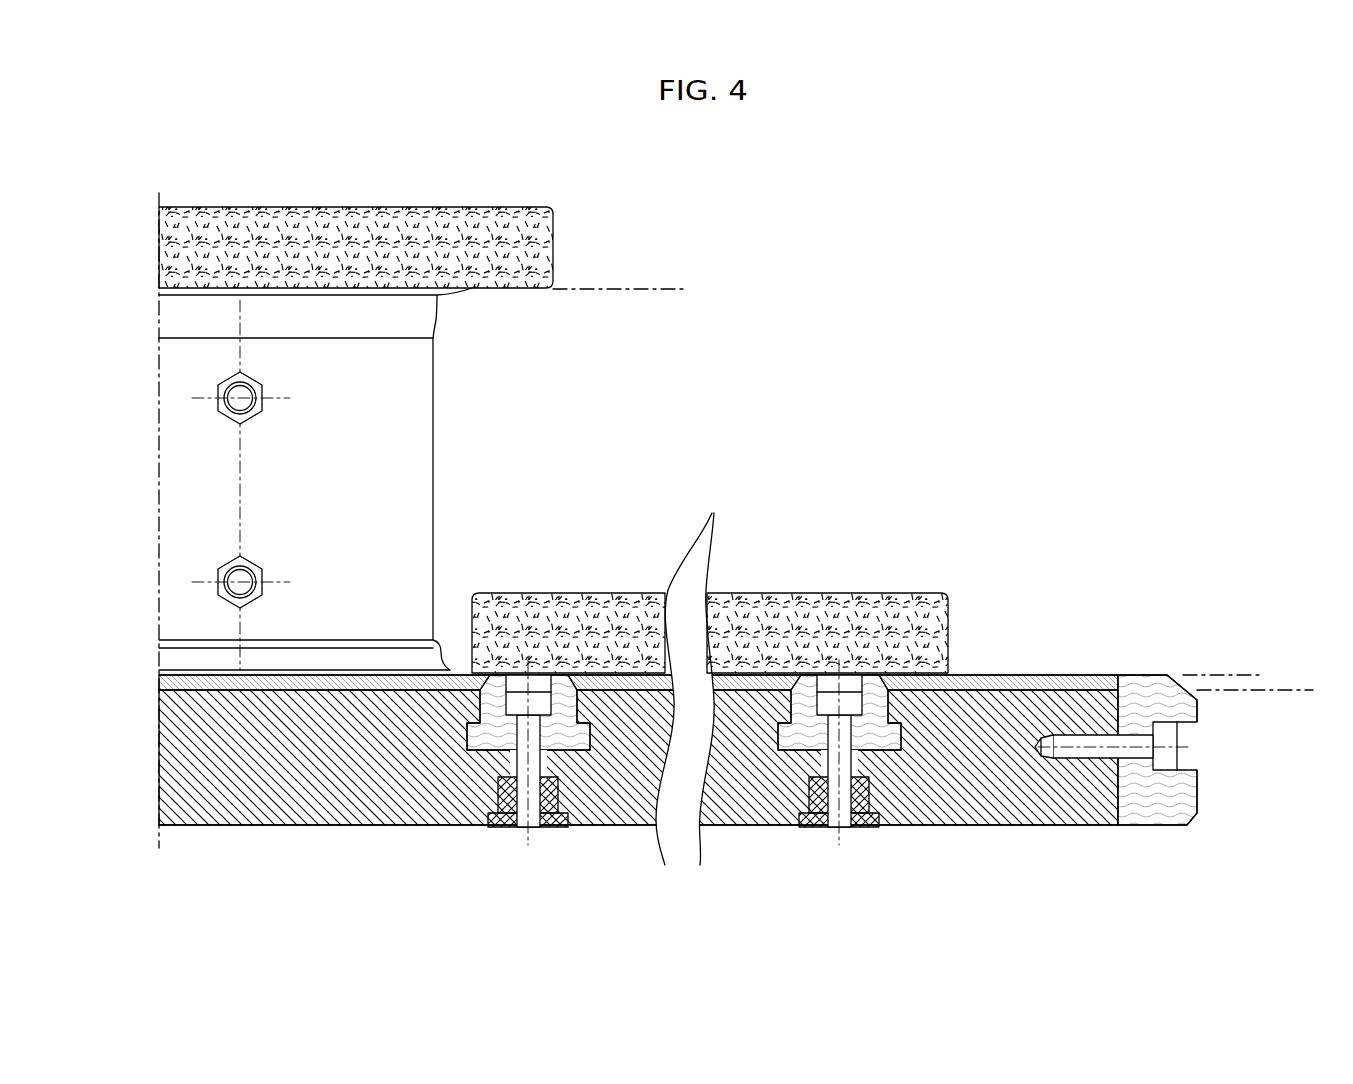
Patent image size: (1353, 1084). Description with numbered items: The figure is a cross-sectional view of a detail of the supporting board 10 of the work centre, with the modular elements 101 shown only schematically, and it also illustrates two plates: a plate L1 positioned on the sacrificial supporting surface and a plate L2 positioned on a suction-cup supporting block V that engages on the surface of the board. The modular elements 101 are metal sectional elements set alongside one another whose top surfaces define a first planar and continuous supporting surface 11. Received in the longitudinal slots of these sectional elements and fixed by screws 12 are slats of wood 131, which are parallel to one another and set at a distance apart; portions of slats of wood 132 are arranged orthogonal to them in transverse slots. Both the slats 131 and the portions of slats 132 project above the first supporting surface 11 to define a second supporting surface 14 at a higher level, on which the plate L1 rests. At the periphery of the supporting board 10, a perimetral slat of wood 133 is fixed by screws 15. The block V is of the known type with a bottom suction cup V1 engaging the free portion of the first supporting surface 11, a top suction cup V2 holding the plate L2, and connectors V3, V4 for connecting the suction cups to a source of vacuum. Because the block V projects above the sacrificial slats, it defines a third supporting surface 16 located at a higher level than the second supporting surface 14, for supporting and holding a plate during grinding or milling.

The supporting board 10 is at (248, 828).
The modular elements 101 is at (375, 808).
The portions of slats of wood 132 is at (1078, 675).
The slats of wood 131 is at (575, 690).
The screws 12 is at (513, 757).
The perimetral slats of wood 133 is at (1158, 812).
The screws 15 is at (1087, 752).
The second supporting surface 14 is at (1193, 670).
The first supporting surface 11 is at (1295, 688).
The third supporting surface 16 is at (633, 286).
The plate L1 is at (804, 590).
The plate L2 is at (318, 205).
The blocks V is at (457, 466).
The bottom suction cup V1 is at (190, 670).
The top suction cup V2 is at (442, 300).
The connector V3 is at (260, 566).
The connector V4 is at (262, 412).